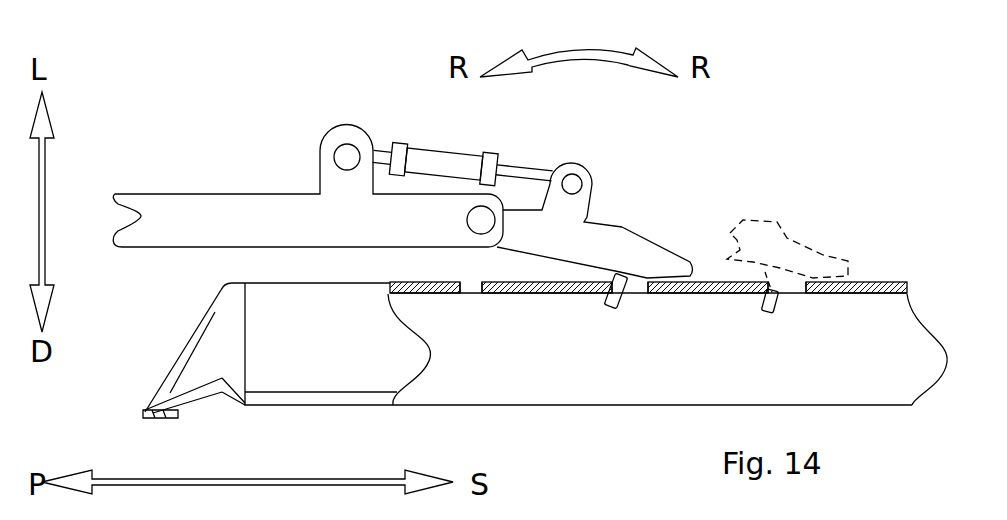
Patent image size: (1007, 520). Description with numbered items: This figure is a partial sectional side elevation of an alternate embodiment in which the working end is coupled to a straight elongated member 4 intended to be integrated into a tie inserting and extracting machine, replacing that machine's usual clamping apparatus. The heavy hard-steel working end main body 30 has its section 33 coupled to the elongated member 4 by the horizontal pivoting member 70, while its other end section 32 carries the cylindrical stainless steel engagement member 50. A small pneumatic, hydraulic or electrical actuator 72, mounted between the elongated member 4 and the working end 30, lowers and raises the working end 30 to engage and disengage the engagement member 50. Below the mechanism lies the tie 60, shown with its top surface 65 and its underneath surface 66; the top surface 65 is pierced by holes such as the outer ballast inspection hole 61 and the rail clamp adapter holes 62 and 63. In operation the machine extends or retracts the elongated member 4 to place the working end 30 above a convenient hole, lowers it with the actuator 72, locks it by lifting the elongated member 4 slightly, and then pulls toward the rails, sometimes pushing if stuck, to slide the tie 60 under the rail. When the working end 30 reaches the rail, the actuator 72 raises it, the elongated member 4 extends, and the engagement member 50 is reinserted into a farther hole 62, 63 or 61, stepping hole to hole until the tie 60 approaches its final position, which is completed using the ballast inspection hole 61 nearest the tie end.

The elongated member 4 is at (226, 223).
The actuator 72 is at (443, 149).
The horizontal pivoting member 70 is at (480, 220).
The working end main body 30 is at (647, 219).
The section of working end 33 is at (573, 230).
The other end section of working end 32 is at (667, 272).
The engagement member 50 is at (610, 310).
The tie 60 is at (213, 316).
The top surface of tie 65 is at (884, 281).
The underneath surface of tie 66 is at (433, 296).
The outer ballast inspection hole 61 is at (470, 293).
The rail clamp adapter hole 62 is at (640, 300).
The rail clamp adapter hole 63 is at (790, 294).